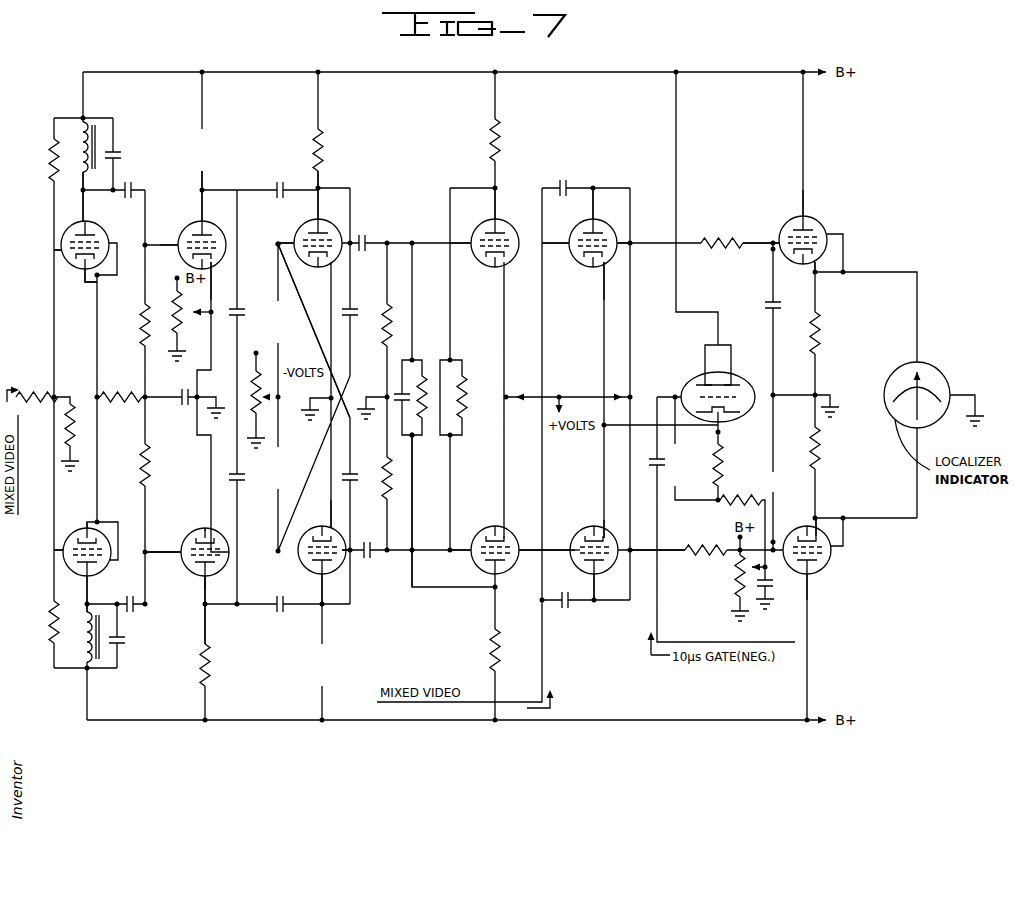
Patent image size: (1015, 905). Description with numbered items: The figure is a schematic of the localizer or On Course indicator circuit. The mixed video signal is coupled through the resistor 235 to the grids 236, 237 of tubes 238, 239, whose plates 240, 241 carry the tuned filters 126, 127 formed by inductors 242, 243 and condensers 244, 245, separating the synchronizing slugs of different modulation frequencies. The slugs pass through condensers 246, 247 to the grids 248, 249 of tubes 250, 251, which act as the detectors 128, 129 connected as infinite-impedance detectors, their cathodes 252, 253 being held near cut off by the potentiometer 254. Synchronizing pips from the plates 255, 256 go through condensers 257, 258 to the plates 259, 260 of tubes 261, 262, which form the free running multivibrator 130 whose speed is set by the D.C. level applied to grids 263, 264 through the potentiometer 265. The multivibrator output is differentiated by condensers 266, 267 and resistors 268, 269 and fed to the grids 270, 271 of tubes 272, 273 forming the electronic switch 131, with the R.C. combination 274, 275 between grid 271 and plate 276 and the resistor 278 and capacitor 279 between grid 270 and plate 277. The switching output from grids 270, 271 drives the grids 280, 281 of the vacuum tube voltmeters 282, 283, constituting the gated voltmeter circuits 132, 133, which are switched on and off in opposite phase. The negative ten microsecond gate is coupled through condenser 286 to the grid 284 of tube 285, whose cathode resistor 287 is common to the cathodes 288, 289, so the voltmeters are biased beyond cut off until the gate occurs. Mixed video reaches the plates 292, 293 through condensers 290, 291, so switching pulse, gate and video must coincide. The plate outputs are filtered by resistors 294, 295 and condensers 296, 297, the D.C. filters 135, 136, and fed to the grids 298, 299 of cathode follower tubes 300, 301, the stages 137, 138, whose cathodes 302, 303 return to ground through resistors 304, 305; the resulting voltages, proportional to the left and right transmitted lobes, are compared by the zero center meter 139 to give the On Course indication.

The tuned filter 126 is at (80, 199).
The tuned filter 127 is at (78, 591).
The detector 128 is at (194, 211).
The detector 129 is at (154, 500).
The freely running multivibrator 130 is at (288, 460).
The electronic switch 131 is at (472, 401).
The gated voltmeter circuit 132 is at (546, 280).
The gated voltmeter circuit 133 is at (568, 471).
The D.C. filter 135 is at (744, 267).
The D.C. filter 136 is at (693, 549).
The cathode follower stage 137 is at (862, 231).
The cathode follower stage 138 is at (807, 611).
The zero center meter 139 is at (924, 365).
The resistor 235 is at (37, 388).
The grid 236 is at (60, 249).
The grid 237 is at (64, 548).
The tube 238 is at (84, 272).
The tube 239 is at (86, 526).
The plate 240 is at (90, 203).
The plate 241 is at (90, 584).
The inductor 242 is at (80, 130).
The inductor 243 is at (84, 660).
The condenser 244 is at (118, 152).
The condenser 245 is at (122, 643).
The condenser 246 is at (132, 184).
The condenser 247 is at (134, 610).
The grid 248 is at (180, 243).
The grid 249 is at (200, 574).
The tube 250 is at (178, 249).
The tube 251 is at (195, 535).
The cathode 252 is at (214, 258).
The cathode 253 is at (208, 535).
The potentiometer 254 is at (180, 308).
The plate 255 is at (200, 230).
The plate 256 is at (206, 582).
The condenser 257 is at (281, 182).
The condenser 258 is at (279, 612).
The plate 259 is at (320, 186).
The plate 260 is at (332, 573).
The tube 261 is at (294, 228).
The tube 262 is at (346, 540).
The grid 263 is at (278, 244).
The grid 264 is at (320, 560).
The potentiometer 265 is at (256, 352).
The condenser 266 is at (364, 240).
The condenser 267 is at (367, 558).
The resistor 268 is at (386, 332).
The resistor 269 is at (386, 460).
The grid 270 is at (472, 236).
The grid 271 is at (483, 538).
The tube 272 is at (497, 221).
The tube 273 is at (506, 540).
The R.C. combination element 274 is at (463, 375).
The R.C. combination element 275 is at (423, 375).
The plate 276 is at (498, 160).
The plate 277 is at (497, 590).
The resistor 278 is at (404, 385).
The capacitor 279 is at (414, 450).
The grid 280 is at (578, 243).
The grid 281 is at (584, 538).
The vacuum tube voltmeter 282 is at (590, 265).
The vacuum tube voltmeter 283 is at (602, 530).
The grid 284 is at (690, 385).
The tube 285 is at (705, 358).
The condenser 286 is at (660, 470).
The cathode resistor 287 is at (722, 450).
The cathode 288 is at (614, 256).
The cathode 289 is at (590, 532).
The condenser 290 is at (565, 182).
The condenser 291 is at (568, 610).
The plate 292 is at (602, 234).
The plate 293 is at (596, 575).
The resistor 294 is at (720, 238).
The resistor 295 is at (708, 560).
The condenser 296 is at (770, 300).
The condenser 297 is at (742, 490).
The grid 298 is at (783, 240).
The grid 299 is at (768, 590).
The cathode follower tube 300 is at (805, 215).
The cathode follower tube 301 is at (826, 565).
The cathode 302 is at (810, 262).
The cathode 303 is at (800, 528).
The resistor 304 is at (818, 340).
The resistor 305 is at (818, 450).